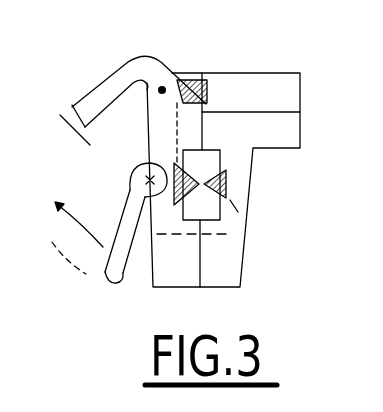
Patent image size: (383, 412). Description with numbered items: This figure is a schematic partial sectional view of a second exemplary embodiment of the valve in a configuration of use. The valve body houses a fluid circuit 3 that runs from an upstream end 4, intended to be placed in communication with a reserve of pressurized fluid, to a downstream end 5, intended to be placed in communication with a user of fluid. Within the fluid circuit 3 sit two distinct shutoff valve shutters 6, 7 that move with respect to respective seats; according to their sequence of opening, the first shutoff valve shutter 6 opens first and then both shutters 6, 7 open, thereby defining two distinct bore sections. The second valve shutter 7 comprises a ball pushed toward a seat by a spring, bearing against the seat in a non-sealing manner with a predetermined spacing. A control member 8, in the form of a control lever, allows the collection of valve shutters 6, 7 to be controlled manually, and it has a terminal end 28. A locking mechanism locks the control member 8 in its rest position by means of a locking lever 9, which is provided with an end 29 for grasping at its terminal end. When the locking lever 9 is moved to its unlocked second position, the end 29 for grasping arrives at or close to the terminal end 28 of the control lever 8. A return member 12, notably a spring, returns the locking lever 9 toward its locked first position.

The fluid circuit 3 is at (273, 112).
The upstream end 4 is at (200, 288).
The downstream end 5 is at (302, 109).
The shutoff valve shutter 6 is at (178, 200).
The second valve shutter 7 is at (222, 198).
The control member 8 is at (127, 190).
The locking lever 9 is at (110, 92).
The return member 12 is at (185, 59).
The terminal end of the control lever 28 is at (113, 276).
The end for grasping 29 is at (77, 107).